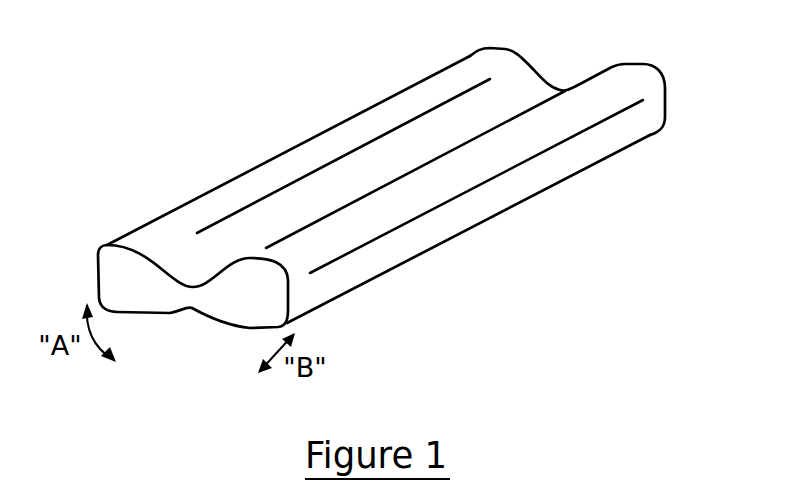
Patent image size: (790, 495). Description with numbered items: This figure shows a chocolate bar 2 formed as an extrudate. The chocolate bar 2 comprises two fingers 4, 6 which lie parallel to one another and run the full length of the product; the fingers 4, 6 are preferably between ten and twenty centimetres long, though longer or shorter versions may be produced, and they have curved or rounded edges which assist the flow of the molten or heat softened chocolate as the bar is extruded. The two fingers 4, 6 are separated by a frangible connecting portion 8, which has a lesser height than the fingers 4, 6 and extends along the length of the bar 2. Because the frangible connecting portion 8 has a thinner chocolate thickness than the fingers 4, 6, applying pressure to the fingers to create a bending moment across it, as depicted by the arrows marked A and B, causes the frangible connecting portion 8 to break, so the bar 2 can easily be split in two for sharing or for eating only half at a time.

The chocolate bar 2 is at (322, 110).
The finger 4 is at (173, 227).
The finger 6 is at (413, 235).
The frangible connecting portion 8 is at (190, 289).